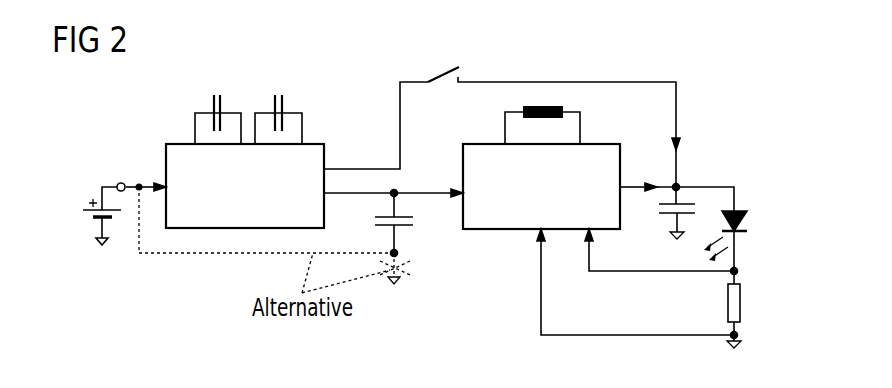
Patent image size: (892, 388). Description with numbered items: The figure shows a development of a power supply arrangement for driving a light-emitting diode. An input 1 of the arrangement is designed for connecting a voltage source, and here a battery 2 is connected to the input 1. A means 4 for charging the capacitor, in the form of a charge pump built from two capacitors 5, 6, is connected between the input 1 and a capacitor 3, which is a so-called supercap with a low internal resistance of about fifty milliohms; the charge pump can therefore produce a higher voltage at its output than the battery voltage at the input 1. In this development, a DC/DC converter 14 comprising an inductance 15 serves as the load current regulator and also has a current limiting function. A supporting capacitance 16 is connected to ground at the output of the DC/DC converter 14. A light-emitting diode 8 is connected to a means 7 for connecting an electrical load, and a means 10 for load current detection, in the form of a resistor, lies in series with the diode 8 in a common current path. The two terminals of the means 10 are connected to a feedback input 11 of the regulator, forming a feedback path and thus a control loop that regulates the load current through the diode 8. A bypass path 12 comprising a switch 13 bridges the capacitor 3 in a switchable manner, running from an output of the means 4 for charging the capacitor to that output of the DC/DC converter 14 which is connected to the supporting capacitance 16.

The input 1 is at (120, 183).
The battery 2 is at (88, 212).
The capacitor 3 is at (375, 221).
The means for charging the capacitor 4 is at (172, 143).
The capacitor 5 is at (214, 95).
The capacitor 6 is at (275, 95).
The means for connecting an electrical load 7 is at (680, 185).
The light-emitting diode 8 is at (747, 220).
The means for load current detection 10 is at (740, 305).
The feedback input 11 is at (536, 234).
The bypass path 12 is at (400, 95).
The switch 13 is at (453, 68).
The DC/DC converter 14 is at (600, 143).
The inductance 15 is at (522, 110).
The supporting capacitance 16 is at (671, 217).